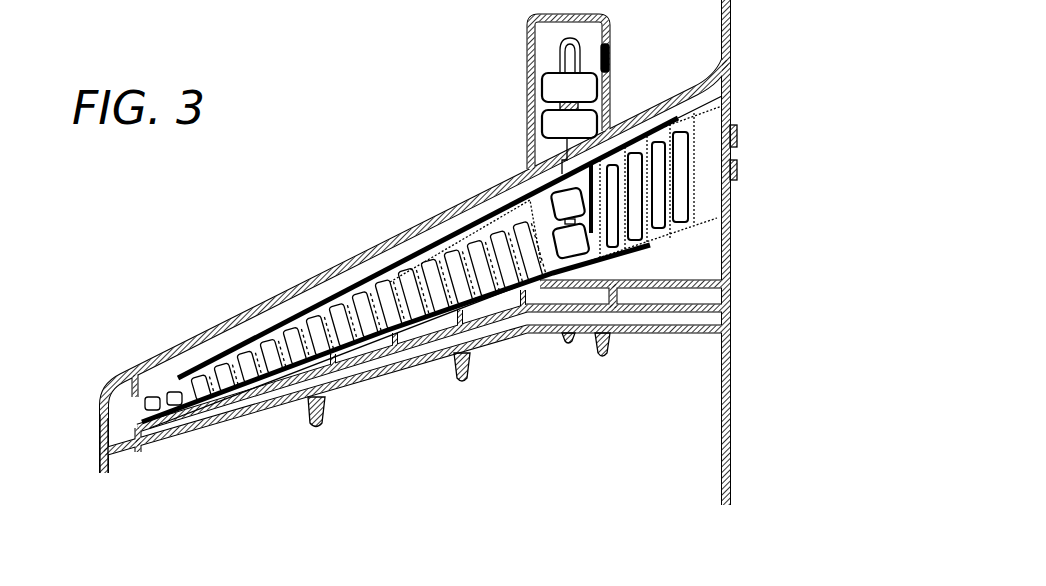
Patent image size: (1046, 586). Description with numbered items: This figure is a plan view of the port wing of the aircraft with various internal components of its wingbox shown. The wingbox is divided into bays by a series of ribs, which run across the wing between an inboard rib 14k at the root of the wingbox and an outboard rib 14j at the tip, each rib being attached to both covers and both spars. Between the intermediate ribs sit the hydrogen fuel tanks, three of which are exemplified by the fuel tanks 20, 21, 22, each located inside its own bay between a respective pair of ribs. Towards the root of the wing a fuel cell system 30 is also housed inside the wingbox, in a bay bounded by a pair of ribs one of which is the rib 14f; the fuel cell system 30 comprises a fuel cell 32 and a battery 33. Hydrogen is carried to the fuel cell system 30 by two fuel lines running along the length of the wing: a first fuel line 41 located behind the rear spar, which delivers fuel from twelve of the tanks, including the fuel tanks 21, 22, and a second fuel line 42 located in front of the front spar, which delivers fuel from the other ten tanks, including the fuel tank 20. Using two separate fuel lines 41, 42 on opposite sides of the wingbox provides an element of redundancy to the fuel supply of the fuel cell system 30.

The rib 14f is at (601, 178).
The outboard rib 14j is at (145, 407).
The inboard rib 14k is at (722, 157).
The fuel tank 20 is at (445, 247).
The fuel tank 21 is at (425, 272).
The fuel tank 22 is at (402, 263).
The fuel cell system 30 is at (545, 263).
The fuel cell 32 is at (577, 247).
The battery 33 is at (562, 198).
The first fuel line 41 is at (216, 397).
The second fuel line 42 is at (265, 333).